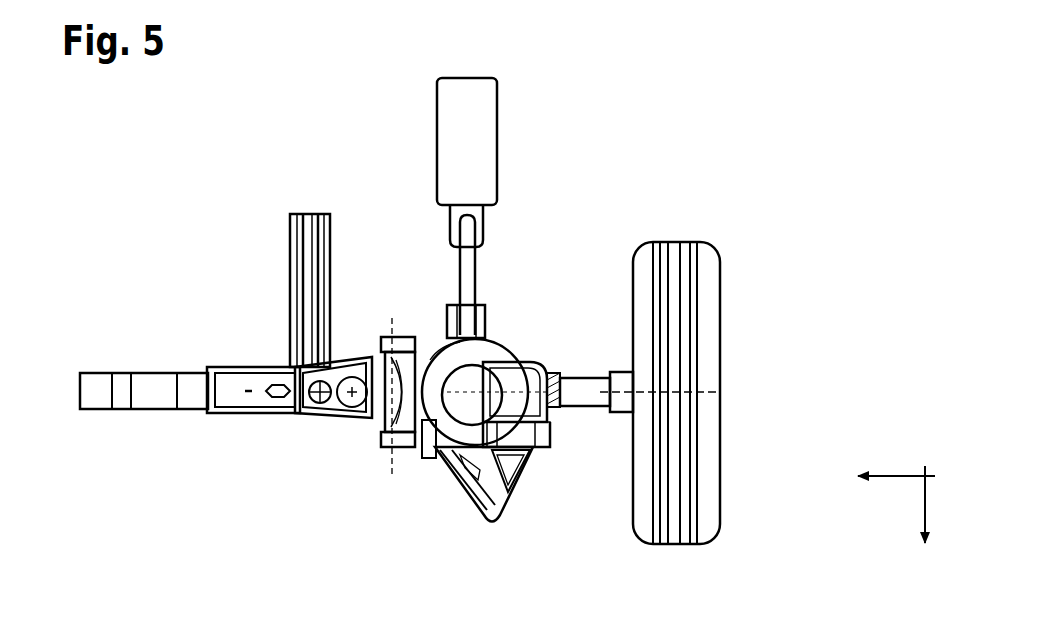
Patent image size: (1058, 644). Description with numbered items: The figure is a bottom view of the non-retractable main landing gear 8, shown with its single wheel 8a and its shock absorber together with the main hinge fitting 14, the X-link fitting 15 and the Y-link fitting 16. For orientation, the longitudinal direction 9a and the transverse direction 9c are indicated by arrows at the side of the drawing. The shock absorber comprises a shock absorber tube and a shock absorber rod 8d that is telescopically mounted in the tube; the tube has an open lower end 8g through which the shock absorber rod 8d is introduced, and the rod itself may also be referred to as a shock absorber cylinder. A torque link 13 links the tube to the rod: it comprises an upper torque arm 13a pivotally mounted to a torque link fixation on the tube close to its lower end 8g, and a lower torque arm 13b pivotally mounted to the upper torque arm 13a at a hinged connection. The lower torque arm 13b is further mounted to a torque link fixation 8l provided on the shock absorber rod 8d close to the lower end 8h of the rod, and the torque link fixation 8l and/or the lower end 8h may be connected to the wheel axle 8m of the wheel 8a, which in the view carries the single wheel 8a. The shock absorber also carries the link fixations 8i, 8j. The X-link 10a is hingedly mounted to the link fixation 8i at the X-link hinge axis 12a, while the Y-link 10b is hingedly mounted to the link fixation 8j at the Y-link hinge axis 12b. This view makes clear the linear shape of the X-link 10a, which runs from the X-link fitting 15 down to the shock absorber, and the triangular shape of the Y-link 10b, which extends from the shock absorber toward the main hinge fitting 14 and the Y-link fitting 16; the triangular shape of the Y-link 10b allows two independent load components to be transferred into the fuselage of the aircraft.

The main landing gear 8 is at (530, 218).
The single wheel 8a is at (705, 315).
The shock absorber rod 8d is at (463, 393).
The lower end 8g is at (435, 385).
The lower end 8h is at (513, 387).
The link fixation 8i is at (443, 317).
The link fixation 8j is at (408, 333).
The torque link fixation 8l is at (547, 403).
The wheel axle 8m is at (585, 383).
The longitudinal direction 9a is at (923, 503).
The transverse direction 9c is at (900, 475).
The X-link 10a is at (468, 277).
The Y-link 10b is at (330, 411).
The X-link hinge axis 12a is at (487, 318).
The Y-link hinge axis 12b is at (386, 449).
The torque link 13 is at (453, 487).
The upper torque arm 13a is at (468, 487).
The lower torque arm 13b is at (508, 480).
The main hinge fitting 14 is at (290, 240).
The X-link fitting 15 is at (437, 122).
The Y-link fitting 16 is at (125, 412).